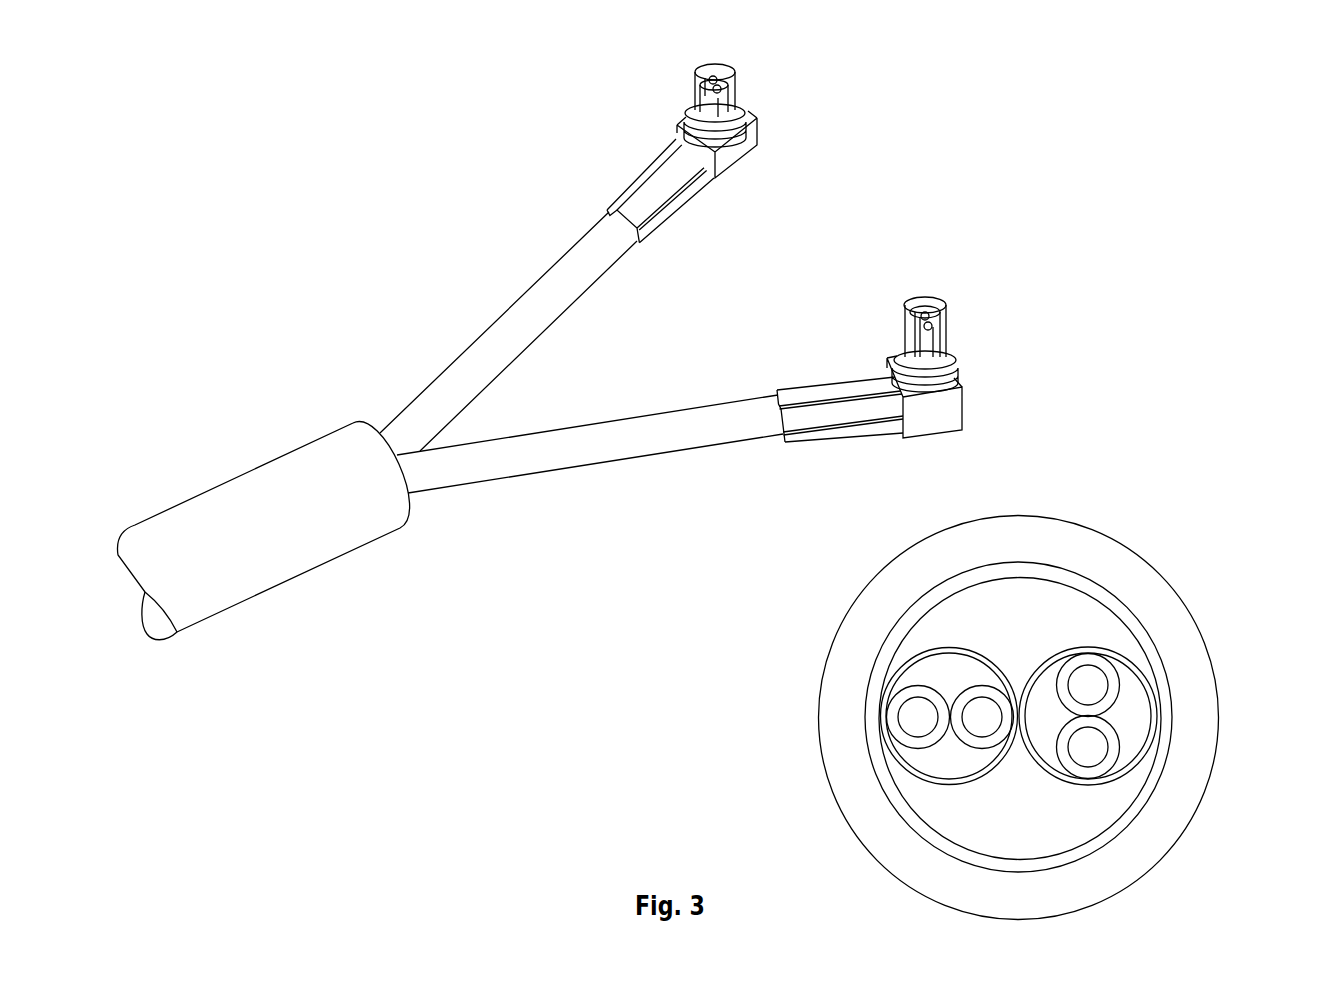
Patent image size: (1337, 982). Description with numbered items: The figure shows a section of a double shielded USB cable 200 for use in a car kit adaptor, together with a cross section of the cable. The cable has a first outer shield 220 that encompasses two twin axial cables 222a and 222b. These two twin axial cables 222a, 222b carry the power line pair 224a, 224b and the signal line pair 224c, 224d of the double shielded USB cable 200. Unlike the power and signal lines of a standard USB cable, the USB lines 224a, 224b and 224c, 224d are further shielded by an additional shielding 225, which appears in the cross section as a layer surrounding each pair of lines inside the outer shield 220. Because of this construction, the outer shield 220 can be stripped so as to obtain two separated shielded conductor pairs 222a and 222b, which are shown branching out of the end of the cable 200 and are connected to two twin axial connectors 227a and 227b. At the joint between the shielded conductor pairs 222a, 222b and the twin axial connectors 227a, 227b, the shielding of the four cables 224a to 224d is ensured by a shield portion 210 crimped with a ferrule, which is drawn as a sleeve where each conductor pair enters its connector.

The double shielded USB cable 200 is at (323, 550).
The shield portion 210 is at (665, 215).
The first outer shield 220 is at (973, 536).
The twin axial cable 222a is at (452, 378).
The twin axial cable 222b is at (560, 460).
The power line 224a is at (913, 751).
The power line 224b is at (965, 749).
The signal line 224c is at (1120, 685).
The signal line 224d is at (1120, 748).
The additional shielding 225 is at (963, 784).
The twin axial connector 227a is at (678, 122).
The twin axial connector 227b is at (965, 412).